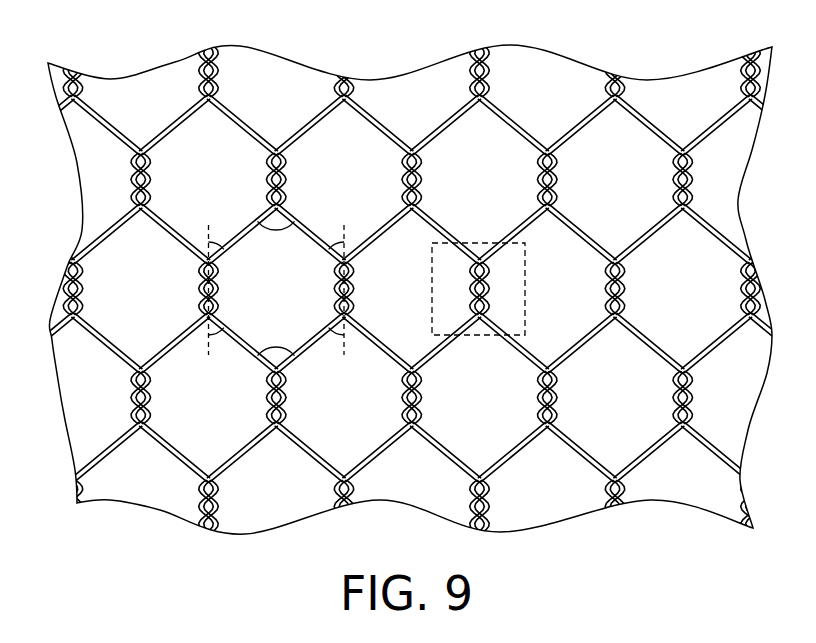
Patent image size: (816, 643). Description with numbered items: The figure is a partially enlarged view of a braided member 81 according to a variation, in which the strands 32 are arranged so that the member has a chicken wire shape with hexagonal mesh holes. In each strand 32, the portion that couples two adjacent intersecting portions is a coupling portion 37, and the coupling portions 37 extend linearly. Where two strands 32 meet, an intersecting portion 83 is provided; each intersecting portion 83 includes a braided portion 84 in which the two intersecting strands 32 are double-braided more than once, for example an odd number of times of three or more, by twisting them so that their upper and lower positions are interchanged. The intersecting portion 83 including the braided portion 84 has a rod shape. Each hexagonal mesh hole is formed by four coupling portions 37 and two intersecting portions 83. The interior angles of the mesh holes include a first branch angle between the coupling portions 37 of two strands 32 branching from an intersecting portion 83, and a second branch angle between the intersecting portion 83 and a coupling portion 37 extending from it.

The braided member 81 is at (553, 79).
The strand 32 is at (103, 110).
The coupling portion 37 is at (247, 225).
The intersecting portion 83 is at (150, 180).
The braided portion 84 is at (469, 292).